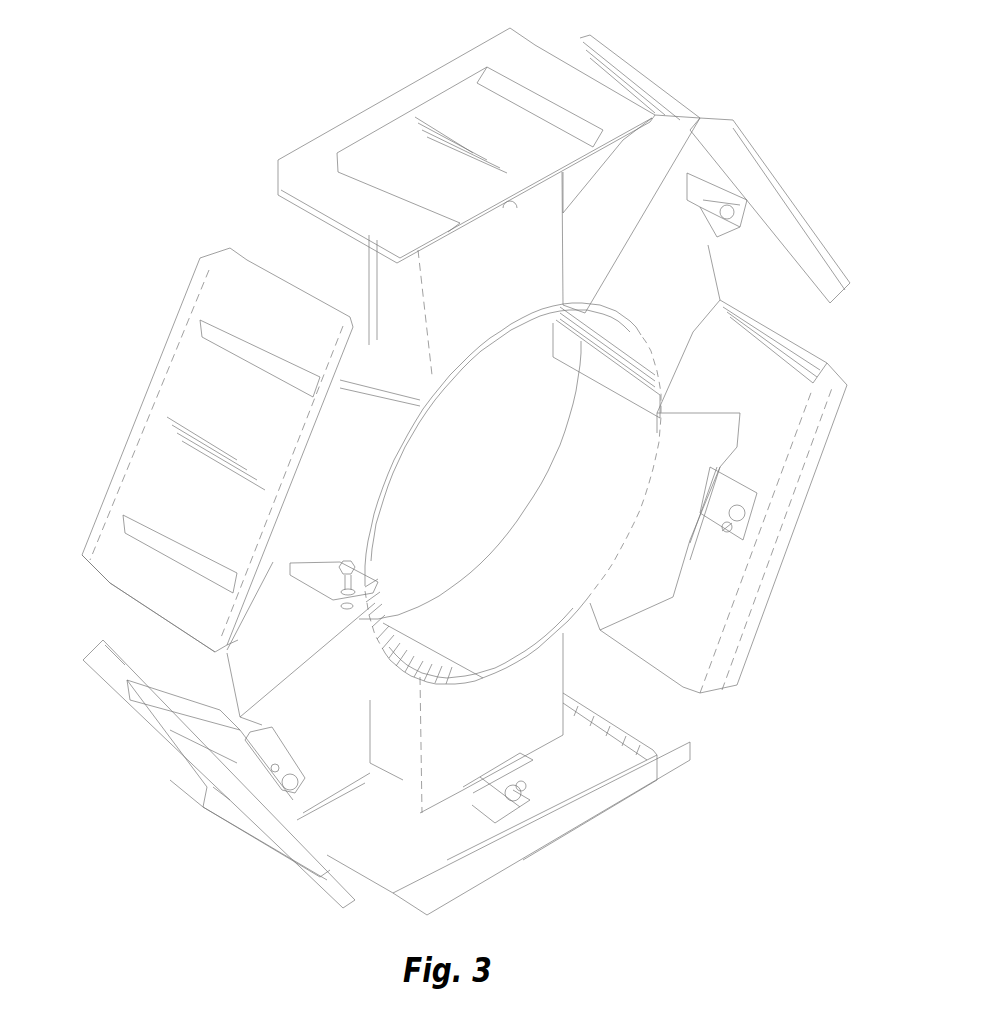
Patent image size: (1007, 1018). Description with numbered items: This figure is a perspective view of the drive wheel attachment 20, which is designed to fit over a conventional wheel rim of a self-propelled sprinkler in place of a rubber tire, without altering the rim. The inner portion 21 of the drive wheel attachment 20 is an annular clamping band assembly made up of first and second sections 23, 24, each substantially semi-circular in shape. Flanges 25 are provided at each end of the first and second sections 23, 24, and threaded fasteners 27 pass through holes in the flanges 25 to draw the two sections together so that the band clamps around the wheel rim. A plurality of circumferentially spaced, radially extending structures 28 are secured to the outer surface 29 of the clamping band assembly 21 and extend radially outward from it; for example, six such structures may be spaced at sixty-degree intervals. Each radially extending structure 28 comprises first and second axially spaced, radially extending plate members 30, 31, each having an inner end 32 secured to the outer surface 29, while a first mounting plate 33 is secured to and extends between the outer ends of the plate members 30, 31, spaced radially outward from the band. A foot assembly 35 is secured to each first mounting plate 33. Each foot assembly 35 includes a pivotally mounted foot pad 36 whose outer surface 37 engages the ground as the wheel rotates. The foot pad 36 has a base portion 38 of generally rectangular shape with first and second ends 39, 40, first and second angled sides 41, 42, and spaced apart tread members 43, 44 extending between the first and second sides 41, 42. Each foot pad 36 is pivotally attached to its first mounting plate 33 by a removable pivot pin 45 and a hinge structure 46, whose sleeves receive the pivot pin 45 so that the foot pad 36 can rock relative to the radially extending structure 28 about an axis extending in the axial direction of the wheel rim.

The drive wheel attachment 20 is at (216, 70).
The inner portion 21 is at (510, 493).
The first section 23 is at (497, 497).
The second section 24 is at (602, 468).
The flanges 25 is at (301, 643).
The threaded fasteners 27 is at (334, 557).
The radially extending structures 28 is at (466, 492).
The outer surface 29 is at (345, 320).
The first plate member 30 is at (708, 135).
The second plate member 31 is at (631, 173).
The inner end 32 is at (392, 306).
The first mounting plate 33 is at (724, 466).
The foot assembly 35 is at (770, 180).
The foot pad 36 is at (466, 144).
The outer surface 37 is at (470, 119).
The base portion 38 is at (178, 369).
The first end 39 is at (151, 603).
The second end 40 is at (205, 410).
The first angled side 41 is at (135, 415).
The second angled side 42 is at (207, 459).
The tread member 43 is at (147, 537).
The tread member 44 is at (223, 300).
The pivot pin 45 is at (760, 519).
The hinge structure 46 is at (767, 577).